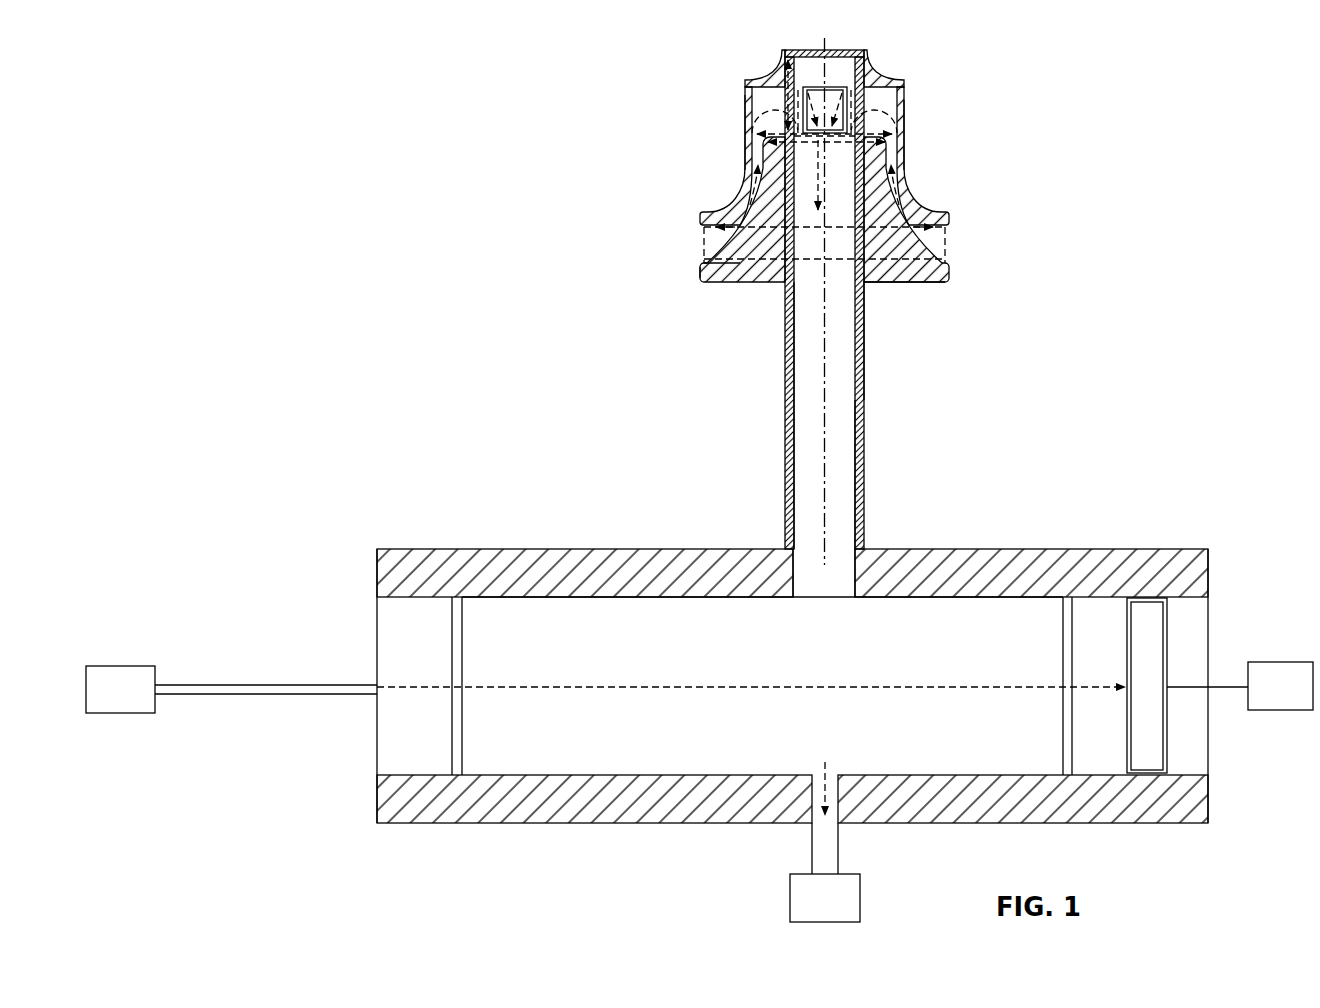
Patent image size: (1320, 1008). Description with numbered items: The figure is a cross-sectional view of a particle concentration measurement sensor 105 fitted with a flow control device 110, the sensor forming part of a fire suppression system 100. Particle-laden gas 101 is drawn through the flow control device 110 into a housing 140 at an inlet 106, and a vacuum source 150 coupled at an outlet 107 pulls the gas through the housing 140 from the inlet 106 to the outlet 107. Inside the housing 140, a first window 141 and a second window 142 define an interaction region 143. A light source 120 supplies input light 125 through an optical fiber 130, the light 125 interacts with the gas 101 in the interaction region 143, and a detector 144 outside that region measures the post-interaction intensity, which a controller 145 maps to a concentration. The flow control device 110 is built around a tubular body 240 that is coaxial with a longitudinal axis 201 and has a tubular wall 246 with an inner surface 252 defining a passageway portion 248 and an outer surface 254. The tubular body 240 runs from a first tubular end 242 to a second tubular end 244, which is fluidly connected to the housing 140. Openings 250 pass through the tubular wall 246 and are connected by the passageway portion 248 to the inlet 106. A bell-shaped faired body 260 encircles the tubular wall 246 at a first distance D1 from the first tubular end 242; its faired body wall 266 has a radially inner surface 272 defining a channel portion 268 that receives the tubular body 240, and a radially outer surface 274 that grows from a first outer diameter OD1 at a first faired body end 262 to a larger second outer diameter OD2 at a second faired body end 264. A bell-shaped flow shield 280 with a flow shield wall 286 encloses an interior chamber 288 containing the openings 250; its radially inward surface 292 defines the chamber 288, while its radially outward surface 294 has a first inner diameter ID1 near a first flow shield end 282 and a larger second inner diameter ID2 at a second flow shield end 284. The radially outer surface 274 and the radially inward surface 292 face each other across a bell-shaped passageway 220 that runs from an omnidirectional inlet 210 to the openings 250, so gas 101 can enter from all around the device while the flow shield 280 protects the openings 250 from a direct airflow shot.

The fire suppression system 100 is at (354, 148).
The particle-laden gas 101 is at (704, 246).
The particle concentration measurement sensor 105 is at (432, 381).
The inlet 106 is at (786, 538).
The outlet 107 is at (785, 836).
The flow control device 110 is at (604, 181).
The light source 120 is at (138, 703).
The input light 125 is at (890, 688).
The optical fiber 130 is at (221, 686).
The housing 140 is at (1085, 547).
The first window 141 is at (462, 637).
The second window 142 is at (1062, 643).
The interaction region 143 is at (777, 676).
The detector 144 is at (1150, 655).
The controller 145 is at (1298, 700).
The vacuum source 150 is at (842, 911).
The longitudinal axis 201 is at (823, 378).
The inlet 210 is at (948, 234).
The passageway 220 is at (903, 193).
The tubular body 240 is at (860, 497).
The first tubular end 242 is at (863, 48).
The second tubular end 244 is at (864, 547).
The tubular wall 246 is at (792, 435).
The passageway portion 248 is at (810, 510).
The openings 250 is at (850, 95).
The inner surface 252 is at (857, 312).
The outer surface 254 is at (863, 435).
The faired body 260 is at (743, 283).
The first faired body end 262 is at (853, 100).
The second faired body end 264 is at (902, 283).
The faired body wall 266 is at (782, 253).
The channel portion 268 is at (752, 133).
The radially inner surface 272 is at (923, 282).
The radially outer surface 274 is at (708, 264).
The flow shield 280 is at (903, 168).
The first flow shield end 282 is at (783, 52).
The second flow shield end 284 is at (950, 235).
The flow shield wall 286 is at (745, 187).
The interior chamber 288 is at (755, 107).
The radially inward surface 292 is at (743, 148).
The radially outward surface 294 is at (745, 168).
The first distance D1 is at (784, 78).
The first inner diameter ID1 is at (890, 133).
The first outer diameter OD1 is at (907, 143).
The second inner diameter ID2 is at (930, 227).
The second outer diameter OD2 is at (738, 281).